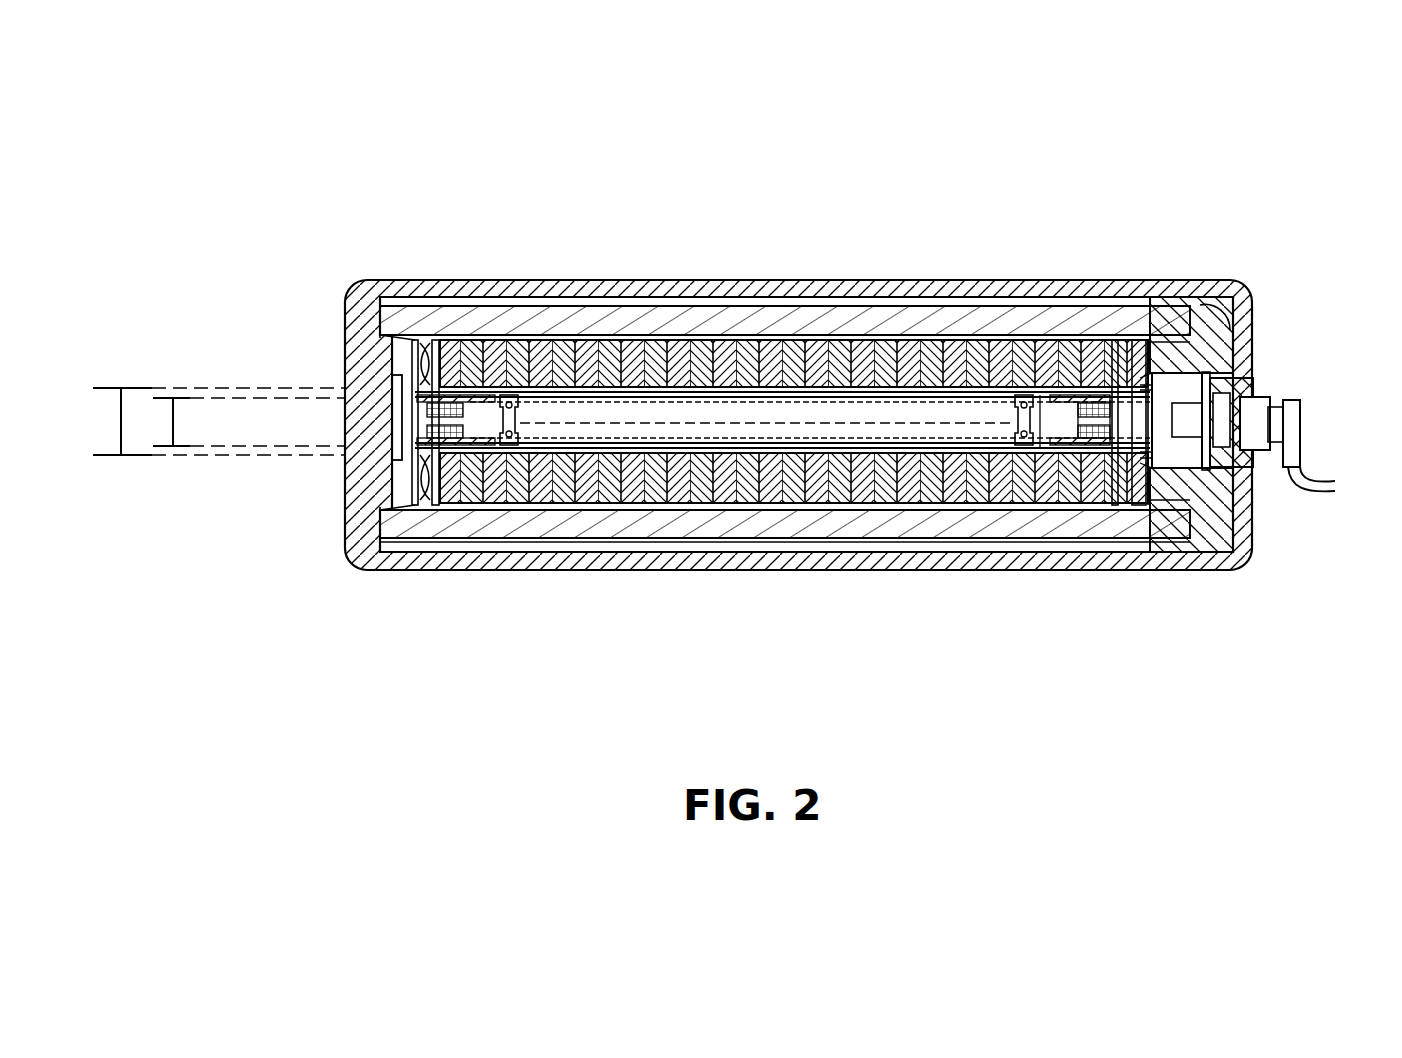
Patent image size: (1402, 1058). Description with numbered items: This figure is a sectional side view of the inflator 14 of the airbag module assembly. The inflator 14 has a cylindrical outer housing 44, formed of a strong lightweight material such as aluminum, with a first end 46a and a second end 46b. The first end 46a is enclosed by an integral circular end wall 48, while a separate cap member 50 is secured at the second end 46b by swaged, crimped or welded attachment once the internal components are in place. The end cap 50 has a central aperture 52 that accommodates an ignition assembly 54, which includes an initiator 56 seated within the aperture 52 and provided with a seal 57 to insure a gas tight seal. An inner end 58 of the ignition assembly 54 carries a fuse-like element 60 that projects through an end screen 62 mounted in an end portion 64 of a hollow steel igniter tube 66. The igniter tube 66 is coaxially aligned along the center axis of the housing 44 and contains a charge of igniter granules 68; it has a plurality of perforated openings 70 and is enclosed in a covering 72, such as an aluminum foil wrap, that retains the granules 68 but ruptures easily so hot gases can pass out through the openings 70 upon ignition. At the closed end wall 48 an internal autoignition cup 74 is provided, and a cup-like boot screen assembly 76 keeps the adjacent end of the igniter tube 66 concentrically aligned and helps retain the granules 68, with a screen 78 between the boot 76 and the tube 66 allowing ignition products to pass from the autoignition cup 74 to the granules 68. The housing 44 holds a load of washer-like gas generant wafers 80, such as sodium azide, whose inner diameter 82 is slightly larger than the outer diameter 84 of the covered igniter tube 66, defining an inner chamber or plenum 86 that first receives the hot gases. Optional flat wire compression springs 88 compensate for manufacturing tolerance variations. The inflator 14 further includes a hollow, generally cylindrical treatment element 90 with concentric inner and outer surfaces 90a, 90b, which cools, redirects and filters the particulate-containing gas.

The inflator 14 is at (804, 272).
The outer housing 44 is at (760, 428).
The first end 46a is at (364, 578).
The second end 46b is at (1204, 590).
The end wall 48 is at (346, 290).
The cap member 50 is at (1210, 330).
The central aperture 52 is at (1253, 505).
The ignition assembly 54 is at (1258, 425).
The initiator 56 is at (1192, 418).
The seal 57 is at (1218, 560).
The inner end 58 is at (1130, 480).
The fuse-like element 60 is at (1140, 360).
The end screen 62 is at (1110, 360).
The end portion 64 is at (1088, 465).
The igniter tube 66 is at (1048, 375).
The igniter granules 68 is at (1045, 450).
The perforated openings 70 is at (500, 345).
The covering 72 is at (725, 410).
The autoignition cup 74 is at (392, 395).
The boot screen assembly 76 is at (436, 505).
The screen 78 is at (437, 345).
The gas generant wafers 80 is at (940, 500).
The inner diameter 82 is at (121, 413).
The outer diameter 84 is at (174, 418).
The inner chamber 86 is at (625, 390).
The flat wire compression springs 88 is at (428, 345).
The treatment element 90 is at (785, 480).
The inner surface 90a is at (750, 500).
The outer surface 90b is at (660, 540).